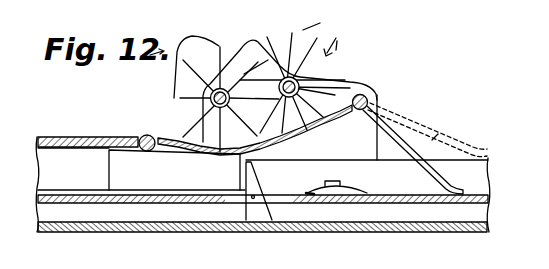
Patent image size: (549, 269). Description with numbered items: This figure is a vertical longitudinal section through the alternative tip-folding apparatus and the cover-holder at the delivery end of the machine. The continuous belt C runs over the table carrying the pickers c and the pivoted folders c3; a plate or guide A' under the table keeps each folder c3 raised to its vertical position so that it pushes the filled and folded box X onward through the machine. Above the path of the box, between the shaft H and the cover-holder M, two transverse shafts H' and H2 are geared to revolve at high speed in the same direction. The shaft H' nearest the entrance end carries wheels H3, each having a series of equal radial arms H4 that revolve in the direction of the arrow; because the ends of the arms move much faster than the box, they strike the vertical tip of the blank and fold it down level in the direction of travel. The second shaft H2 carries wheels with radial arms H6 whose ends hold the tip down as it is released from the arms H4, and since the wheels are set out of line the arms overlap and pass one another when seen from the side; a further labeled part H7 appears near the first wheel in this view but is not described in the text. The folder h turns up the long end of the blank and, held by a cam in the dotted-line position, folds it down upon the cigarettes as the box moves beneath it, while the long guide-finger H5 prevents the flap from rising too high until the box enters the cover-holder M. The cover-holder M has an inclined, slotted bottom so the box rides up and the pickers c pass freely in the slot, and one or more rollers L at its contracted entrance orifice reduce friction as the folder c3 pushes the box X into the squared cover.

The cover-holder M is at (85, 137).
The roller L is at (142, 135).
The box X is at (174, 170).
The belt C is at (490, 200).
The plate or guide A' is at (262, 238).
The folder c3 is at (261, 191).
The picker c is at (367, 192).
The shaft H is at (384, 93).
The shaft H' is at (295, 83).
The shaft H2 is at (211, 99).
The wheel H3 is at (326, 77).
The radial arm H4 is at (327, 34).
The guide-finger H5 is at (339, 119).
The radial arm H6 is at (193, 62).
The spoke H7 is at (249, 66).
The folder h is at (406, 151).